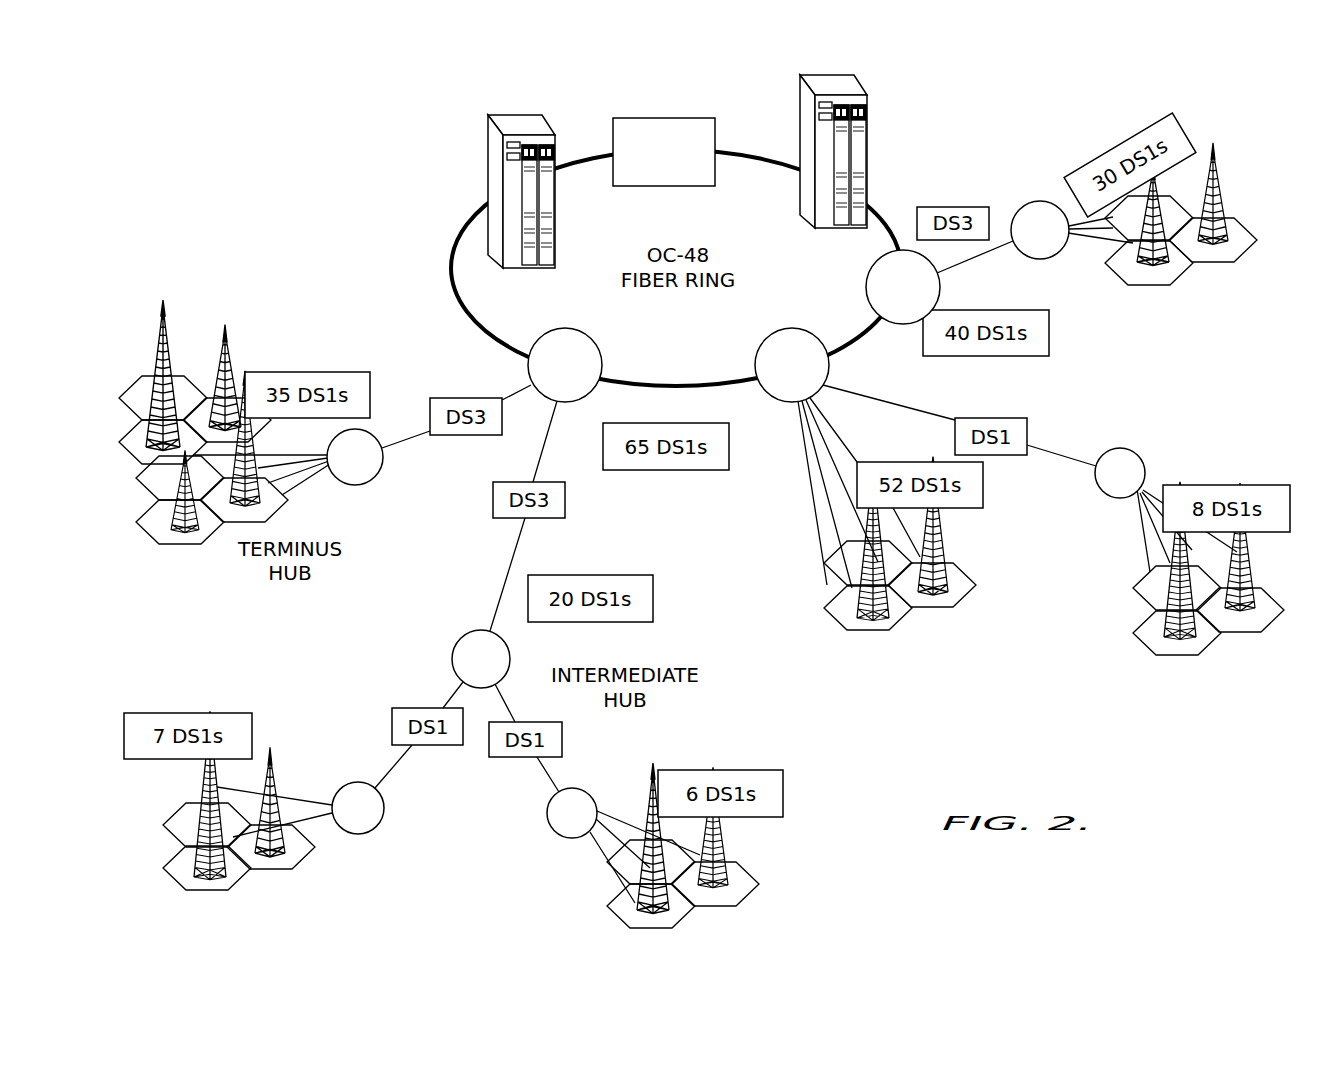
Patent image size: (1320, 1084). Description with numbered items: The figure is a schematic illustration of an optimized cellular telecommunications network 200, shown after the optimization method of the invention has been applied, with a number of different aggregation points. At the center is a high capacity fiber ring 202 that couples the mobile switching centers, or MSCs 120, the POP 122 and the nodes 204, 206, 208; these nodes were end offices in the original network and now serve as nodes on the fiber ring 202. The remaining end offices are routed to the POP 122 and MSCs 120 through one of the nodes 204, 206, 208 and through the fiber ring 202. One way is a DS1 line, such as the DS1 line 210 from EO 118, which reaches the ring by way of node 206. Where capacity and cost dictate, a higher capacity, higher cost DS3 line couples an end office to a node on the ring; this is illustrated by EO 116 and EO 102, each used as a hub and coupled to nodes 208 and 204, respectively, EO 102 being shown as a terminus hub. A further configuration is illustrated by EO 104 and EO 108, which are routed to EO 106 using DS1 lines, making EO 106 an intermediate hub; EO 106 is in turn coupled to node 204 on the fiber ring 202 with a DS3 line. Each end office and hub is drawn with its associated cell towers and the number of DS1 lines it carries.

The optimized network 200 is at (219, 118).
The end office 102 is at (355, 485).
The end office 104 is at (384, 808).
The end office 106 is at (464, 637).
The end office 108 is at (572, 788).
The end office 116 is at (1040, 259).
The end office 118 is at (1097, 477).
The MSC 120 is at (557, 190).
The POP 122 is at (665, 118).
The OC-48 fiber ring 202 is at (486, 332).
The node 204 is at (568, 329).
The node 206 is at (796, 329).
The node 208 is at (873, 266).
The DS1 line 210 is at (884, 400).